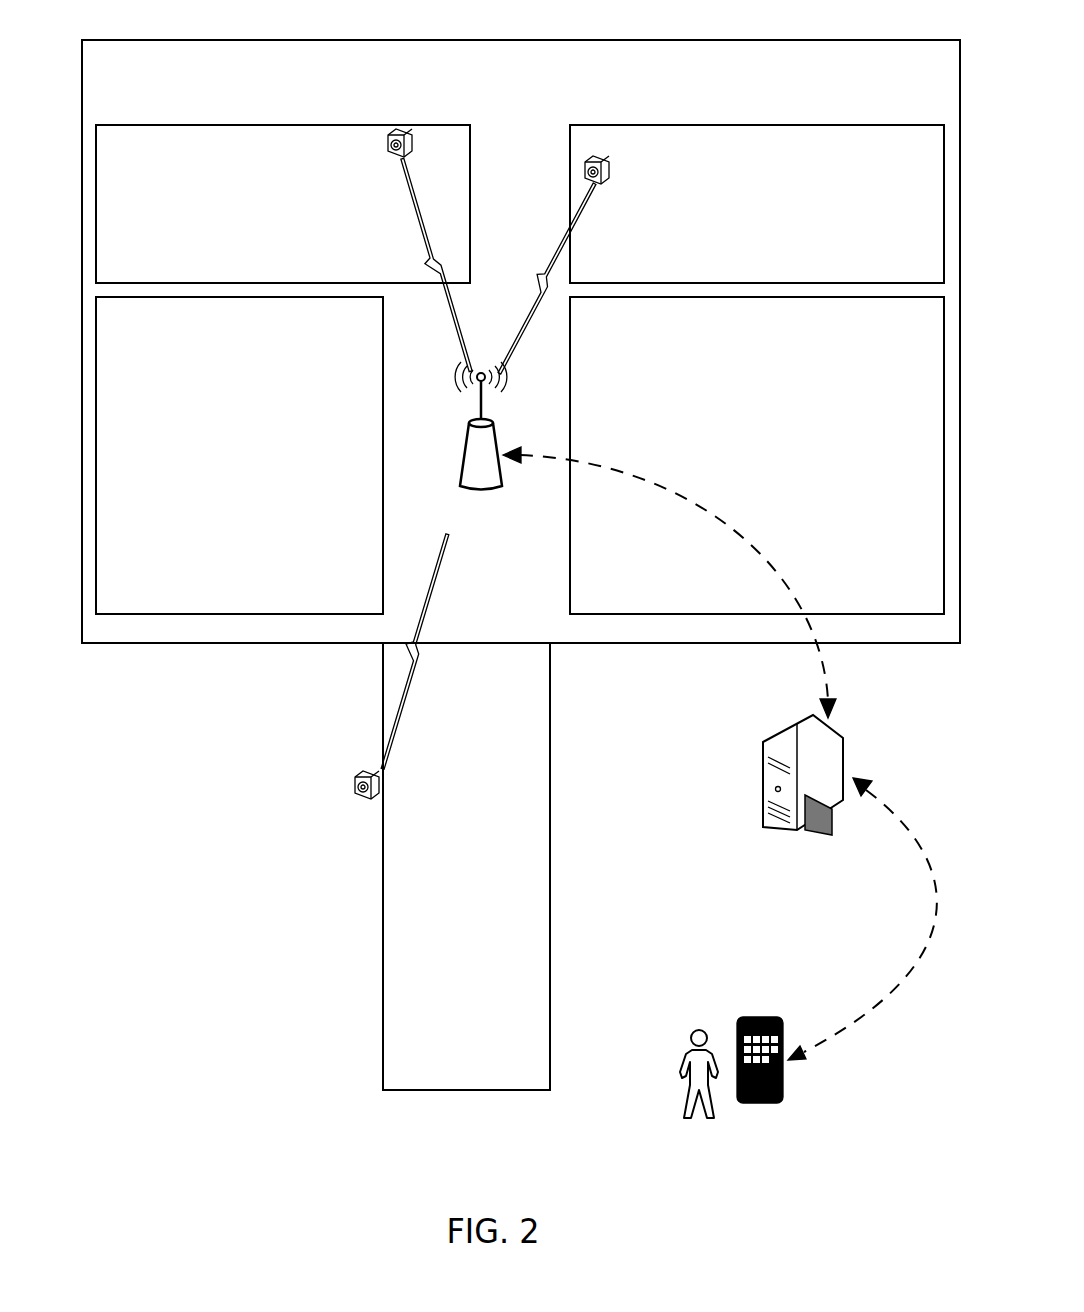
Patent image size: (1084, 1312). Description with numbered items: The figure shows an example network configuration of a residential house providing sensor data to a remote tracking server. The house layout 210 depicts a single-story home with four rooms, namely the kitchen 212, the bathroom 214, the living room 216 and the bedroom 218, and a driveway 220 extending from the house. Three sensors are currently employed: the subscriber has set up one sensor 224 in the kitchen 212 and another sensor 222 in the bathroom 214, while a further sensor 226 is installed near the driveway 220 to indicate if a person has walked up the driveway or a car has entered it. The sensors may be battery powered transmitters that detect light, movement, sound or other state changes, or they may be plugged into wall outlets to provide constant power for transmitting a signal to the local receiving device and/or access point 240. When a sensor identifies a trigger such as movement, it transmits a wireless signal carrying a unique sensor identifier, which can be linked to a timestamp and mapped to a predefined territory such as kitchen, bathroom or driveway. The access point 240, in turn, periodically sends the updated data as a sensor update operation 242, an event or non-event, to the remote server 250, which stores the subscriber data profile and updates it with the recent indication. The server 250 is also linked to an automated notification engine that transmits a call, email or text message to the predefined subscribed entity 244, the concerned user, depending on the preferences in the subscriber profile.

The house layout 210 is at (521, 341).
The kitchen 212 is at (283, 204).
The bathroom 214 is at (757, 204).
The living room 216 is at (239, 455).
The bedroom 218 is at (757, 455).
The driveway 220 is at (466, 866).
The sensor 222 is at (636, 252).
The sensor 224 is at (327, 250).
The sensor 226 is at (310, 666).
The access point 240 is at (478, 458).
The sensor update operation 242 is at (669, 591).
The subscribed entity 244 is at (808, 948).
The server 250 is at (803, 803).